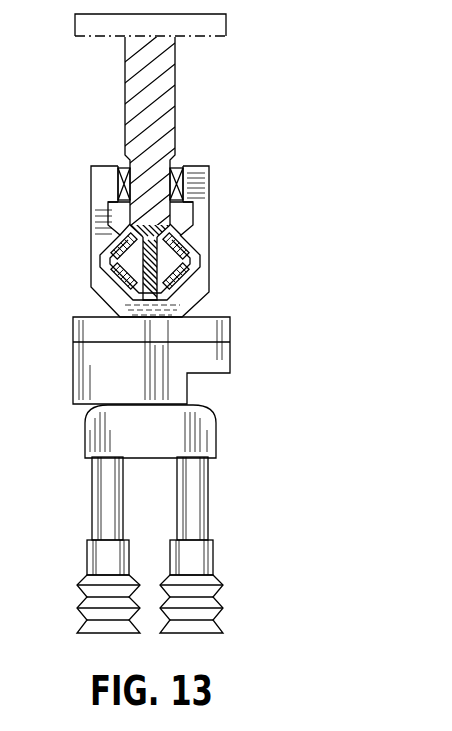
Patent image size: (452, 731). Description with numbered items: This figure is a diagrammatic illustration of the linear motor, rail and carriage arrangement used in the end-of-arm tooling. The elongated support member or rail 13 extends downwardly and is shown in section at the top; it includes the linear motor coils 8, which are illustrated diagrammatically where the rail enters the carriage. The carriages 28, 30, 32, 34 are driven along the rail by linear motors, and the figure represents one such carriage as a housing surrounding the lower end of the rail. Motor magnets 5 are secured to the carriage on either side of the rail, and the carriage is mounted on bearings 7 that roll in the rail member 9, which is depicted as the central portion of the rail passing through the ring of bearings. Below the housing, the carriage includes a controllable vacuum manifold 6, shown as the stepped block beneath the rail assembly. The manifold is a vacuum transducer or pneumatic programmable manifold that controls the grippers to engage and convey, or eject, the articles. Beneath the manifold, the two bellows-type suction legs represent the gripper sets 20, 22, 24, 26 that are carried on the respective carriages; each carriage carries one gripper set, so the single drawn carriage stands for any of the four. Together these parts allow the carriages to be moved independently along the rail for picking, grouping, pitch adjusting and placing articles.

The rail 13 is at (125, 96).
The motor magnets 5 is at (118, 185).
The linear motor coils 8 is at (163, 213).
The bearings 7 is at (122, 240).
The rail member 9 is at (143, 263).
The vacuum manifold 6 is at (73, 353).
The carriage 28 is at (230, 260).
The carriage 30 is at (217, 267).
The carriage 32 is at (240, 232).
The carriage 34 is at (254, 232).
The gripper set 20 is at (228, 558).
The gripper set 22 is at (255, 507).
The gripper set 24 is at (224, 582).
The gripper set 26 is at (280, 582).